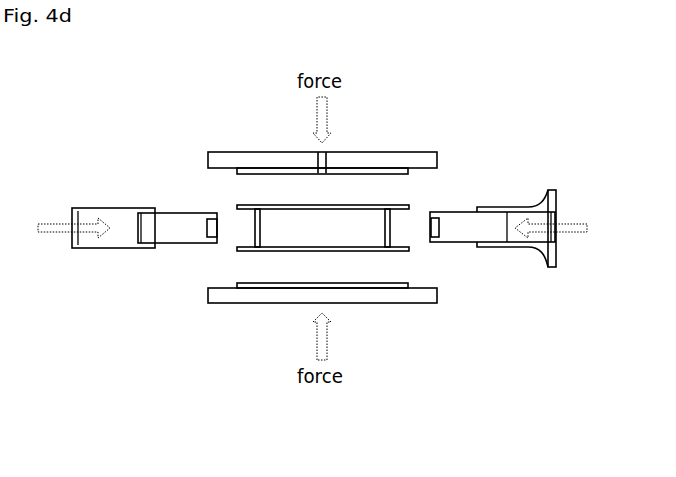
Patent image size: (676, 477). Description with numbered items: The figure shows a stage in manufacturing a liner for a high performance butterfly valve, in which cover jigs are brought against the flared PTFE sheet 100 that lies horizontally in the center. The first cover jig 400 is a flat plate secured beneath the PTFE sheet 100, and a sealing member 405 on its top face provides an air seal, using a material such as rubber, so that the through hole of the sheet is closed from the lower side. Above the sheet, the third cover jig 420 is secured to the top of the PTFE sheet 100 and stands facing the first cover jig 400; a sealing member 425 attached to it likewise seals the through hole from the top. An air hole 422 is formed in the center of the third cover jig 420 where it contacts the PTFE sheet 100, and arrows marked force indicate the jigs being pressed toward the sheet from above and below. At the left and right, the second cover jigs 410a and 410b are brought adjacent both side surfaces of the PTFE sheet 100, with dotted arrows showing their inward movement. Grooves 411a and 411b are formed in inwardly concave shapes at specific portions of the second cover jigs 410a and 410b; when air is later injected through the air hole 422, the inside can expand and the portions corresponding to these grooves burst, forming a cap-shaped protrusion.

The PTFE sheet 100 is at (282, 220).
The first cover jig 400 is at (250, 297).
The sealing member 405 is at (392, 283).
The second cover jig 410a is at (103, 209).
The second cover jig 410b is at (513, 207).
The groove 411a is at (216, 230).
The groove 411b is at (430, 230).
The third cover jig 420 is at (223, 160).
The air hole 422 is at (328, 160).
The sealing member 425 is at (397, 175).